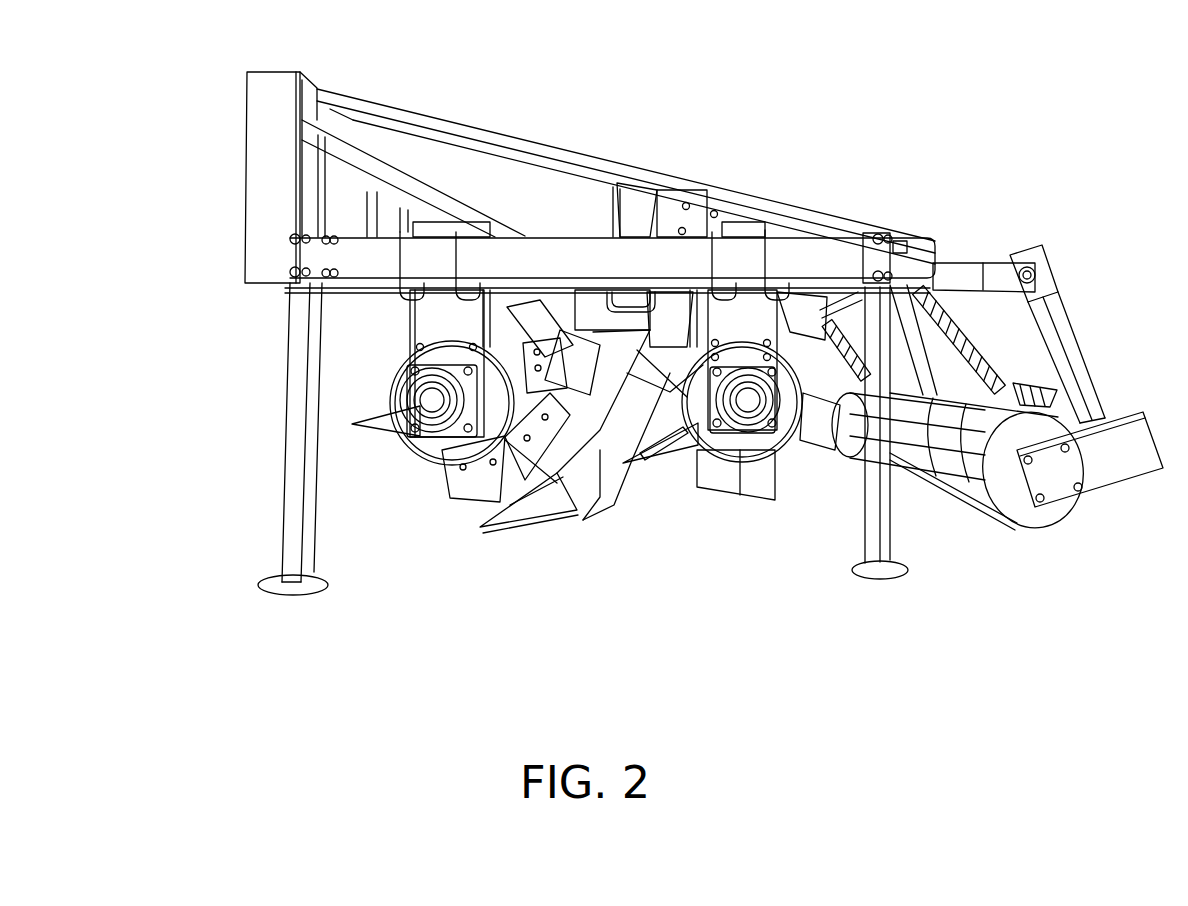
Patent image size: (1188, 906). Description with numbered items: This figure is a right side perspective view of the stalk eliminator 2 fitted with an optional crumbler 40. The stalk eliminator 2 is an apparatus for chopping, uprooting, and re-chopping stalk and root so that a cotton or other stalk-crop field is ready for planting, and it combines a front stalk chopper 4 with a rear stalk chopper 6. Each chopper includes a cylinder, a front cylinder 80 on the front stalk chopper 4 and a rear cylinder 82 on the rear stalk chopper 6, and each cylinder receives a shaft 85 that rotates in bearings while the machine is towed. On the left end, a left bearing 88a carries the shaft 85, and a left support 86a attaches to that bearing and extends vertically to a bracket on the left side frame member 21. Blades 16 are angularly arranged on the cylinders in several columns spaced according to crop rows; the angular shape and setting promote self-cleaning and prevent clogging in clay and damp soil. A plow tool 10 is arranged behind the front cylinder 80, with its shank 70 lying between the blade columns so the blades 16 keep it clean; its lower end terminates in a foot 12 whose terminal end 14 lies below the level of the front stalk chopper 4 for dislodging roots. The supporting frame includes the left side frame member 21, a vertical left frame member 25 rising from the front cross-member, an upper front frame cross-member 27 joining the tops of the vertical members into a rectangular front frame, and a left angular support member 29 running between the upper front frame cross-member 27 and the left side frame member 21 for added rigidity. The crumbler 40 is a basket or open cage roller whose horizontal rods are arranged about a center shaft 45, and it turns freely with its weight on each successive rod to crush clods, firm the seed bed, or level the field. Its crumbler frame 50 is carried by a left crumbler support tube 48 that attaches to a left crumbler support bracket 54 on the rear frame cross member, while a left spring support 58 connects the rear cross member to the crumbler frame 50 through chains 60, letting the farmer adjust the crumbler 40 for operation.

The stalk eliminator 2 is at (652, 334).
The front stalk chopper 4 is at (596, 326).
The rear stalk chopper 6 is at (777, 364).
The plow tool 10 is at (591, 490).
The foot 12 is at (552, 507).
The terminal end 14 is at (500, 523).
The blades 16 is at (511, 356).
The left side frame member 21 is at (583, 253).
The vertical left frame member 25 is at (278, 173).
The upper front frame cross-member 27 is at (398, 163).
The left angular support member 29 is at (680, 180).
The crumbler 40 is at (991, 384).
The center shaft 45 is at (1012, 474).
The left crumbler support tube 48 is at (1060, 333).
The crumbler frame 50 is at (1118, 452).
The left crumbler support bracket 54 is at (956, 270).
The left spring support 58 is at (963, 348).
The chains 60 is at (1024, 385).
The shank 70 is at (607, 457).
The front cylinder 80 is at (458, 445).
The rear cylinder 82 is at (787, 388).
The shaft 85 is at (430, 400).
The left support 86a is at (430, 325).
The left bearing 88a is at (440, 418).